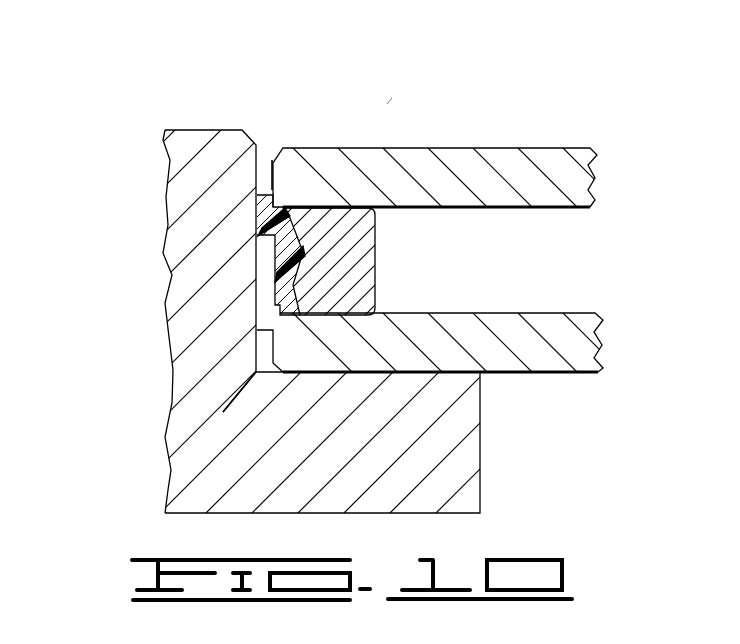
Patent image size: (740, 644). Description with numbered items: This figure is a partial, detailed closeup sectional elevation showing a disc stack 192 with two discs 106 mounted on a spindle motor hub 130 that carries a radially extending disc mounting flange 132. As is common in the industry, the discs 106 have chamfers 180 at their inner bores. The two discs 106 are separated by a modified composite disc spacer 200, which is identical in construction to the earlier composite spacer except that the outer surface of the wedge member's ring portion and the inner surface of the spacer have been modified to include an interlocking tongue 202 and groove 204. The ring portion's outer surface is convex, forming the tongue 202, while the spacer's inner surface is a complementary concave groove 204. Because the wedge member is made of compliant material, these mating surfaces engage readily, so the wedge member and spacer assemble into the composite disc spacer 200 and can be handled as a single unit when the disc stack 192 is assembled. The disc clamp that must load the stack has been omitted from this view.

The spindle motor hub 130 is at (187, 131).
The disc mounting flange 132 is at (480, 425).
The disc 106 is at (588, 148).
The chamfer 180 is at (272, 157).
The disc stack 192 is at (386, 106).
The composite disc spacer 200 is at (259, 267).
The tongue 202 is at (322, 240).
The groove 204 is at (297, 272).